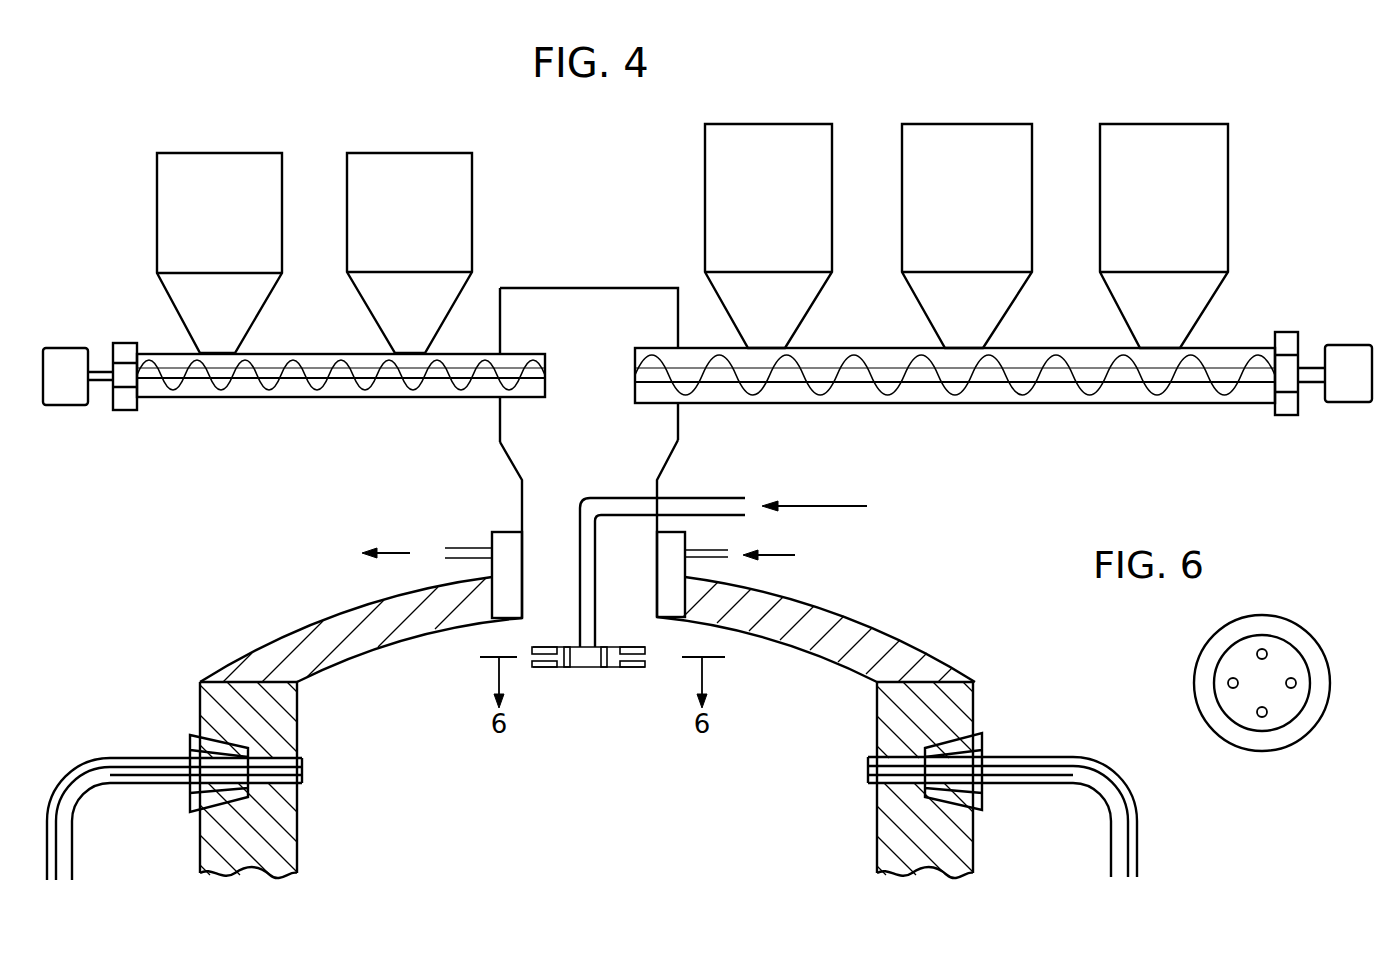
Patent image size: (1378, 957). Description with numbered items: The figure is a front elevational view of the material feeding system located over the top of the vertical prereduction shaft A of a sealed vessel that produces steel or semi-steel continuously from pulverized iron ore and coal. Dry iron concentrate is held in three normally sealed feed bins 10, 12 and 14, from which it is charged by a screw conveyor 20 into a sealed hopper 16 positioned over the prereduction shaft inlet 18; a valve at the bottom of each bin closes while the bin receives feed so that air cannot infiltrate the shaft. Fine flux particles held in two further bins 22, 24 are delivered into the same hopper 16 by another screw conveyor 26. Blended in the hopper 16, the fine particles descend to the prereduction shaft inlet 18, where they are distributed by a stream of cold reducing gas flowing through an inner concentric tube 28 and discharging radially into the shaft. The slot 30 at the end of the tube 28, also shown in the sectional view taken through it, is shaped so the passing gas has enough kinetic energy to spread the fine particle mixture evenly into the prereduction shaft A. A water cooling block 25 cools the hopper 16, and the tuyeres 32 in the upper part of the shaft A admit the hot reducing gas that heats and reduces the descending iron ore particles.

In FIG. 4, the feed bin 10 is at (797, 229).
In FIG. 4, the feed bin 12 is at (990, 229).
In FIG. 4, the feed bin 14 is at (1190, 229).
In FIG. 4, the sealed hopper 16 is at (571, 287).
In FIG. 4, the prereduction shaft inlet 18 is at (530, 506).
In FIG. 4, the screw conveyor 20 is at (842, 352).
In FIG. 4, the bin 22 is at (243, 226).
In FIG. 4, the bin 24 is at (375, 226).
In FIG. 4, the water cooling block 25 is at (495, 570).
In FIG. 4, the screw conveyor 26 is at (307, 355).
In FIG. 4, the inner concentric tube 28 is at (586, 589).
In FIG. 4, the slot 30 is at (642, 657).
In FIG. 6, the slot 30 is at (1322, 645).
In FIG. 4, the tuyeres 32 is at (998, 750).
In FIG. 4, the prereduction shaft A is at (932, 647).